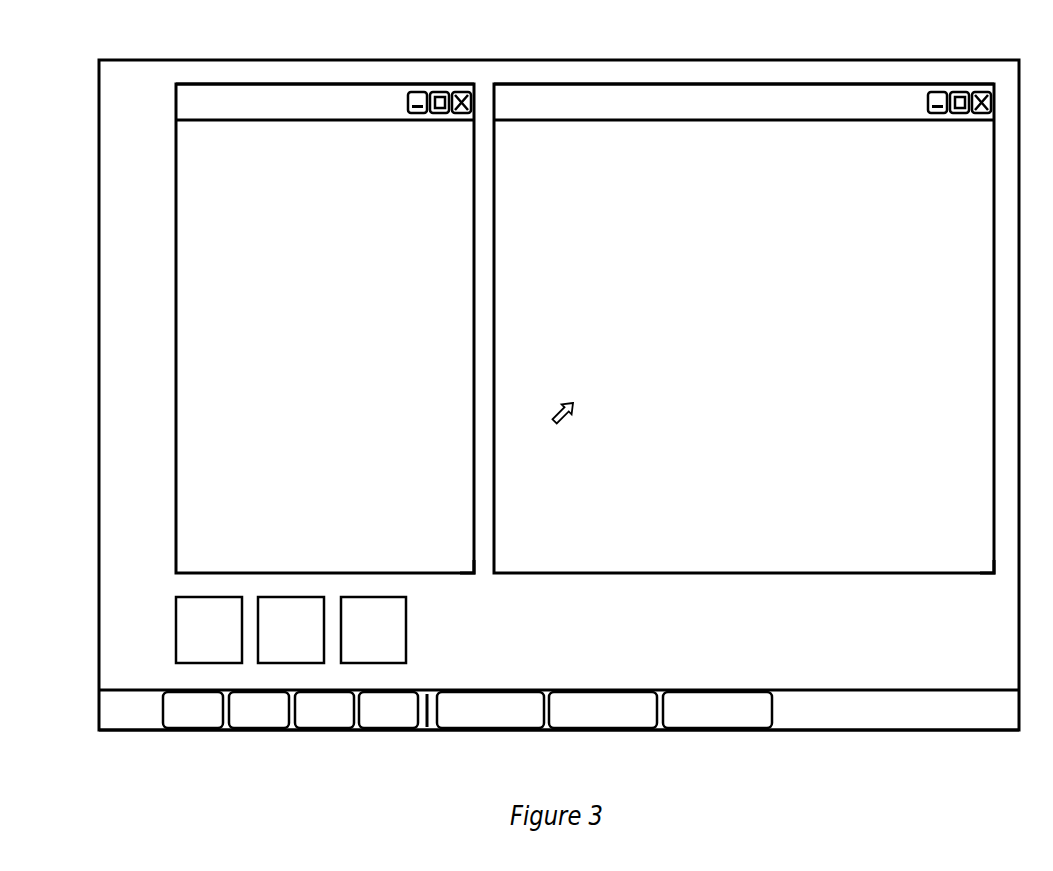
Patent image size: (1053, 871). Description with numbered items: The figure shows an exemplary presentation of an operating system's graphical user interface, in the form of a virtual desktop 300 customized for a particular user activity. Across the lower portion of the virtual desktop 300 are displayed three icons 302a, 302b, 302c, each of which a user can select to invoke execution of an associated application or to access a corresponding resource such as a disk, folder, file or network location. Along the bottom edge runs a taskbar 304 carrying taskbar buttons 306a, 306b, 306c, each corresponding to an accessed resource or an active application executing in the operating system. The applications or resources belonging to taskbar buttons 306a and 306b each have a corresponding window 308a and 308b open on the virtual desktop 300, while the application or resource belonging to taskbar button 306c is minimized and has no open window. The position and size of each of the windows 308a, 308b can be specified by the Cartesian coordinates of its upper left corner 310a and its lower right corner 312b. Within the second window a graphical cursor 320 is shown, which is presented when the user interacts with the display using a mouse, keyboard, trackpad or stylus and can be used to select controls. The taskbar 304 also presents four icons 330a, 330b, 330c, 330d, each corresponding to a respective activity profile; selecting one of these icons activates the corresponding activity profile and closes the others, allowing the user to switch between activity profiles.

The virtual desktop 300 is at (108, 186).
The taskbar 304 is at (108, 706).
The window 308a is at (343, 333).
The window 308b is at (778, 333).
The upper left corner 310a is at (176, 84).
The lower right corner 312b is at (474, 573).
The icon 302a is at (229, 655).
The icon 302b is at (311, 655).
The icon 302c is at (394, 655).
The icon 330a is at (213, 723).
The icon 330b is at (279, 723).
The icon 330c is at (345, 723).
The icon 330d is at (409, 723).
The taskbar button 306a is at (510, 723).
The taskbar button 306b is at (623, 723).
The taskbar button 306c is at (737, 723).
The graphical cursor 320 is at (571, 412).